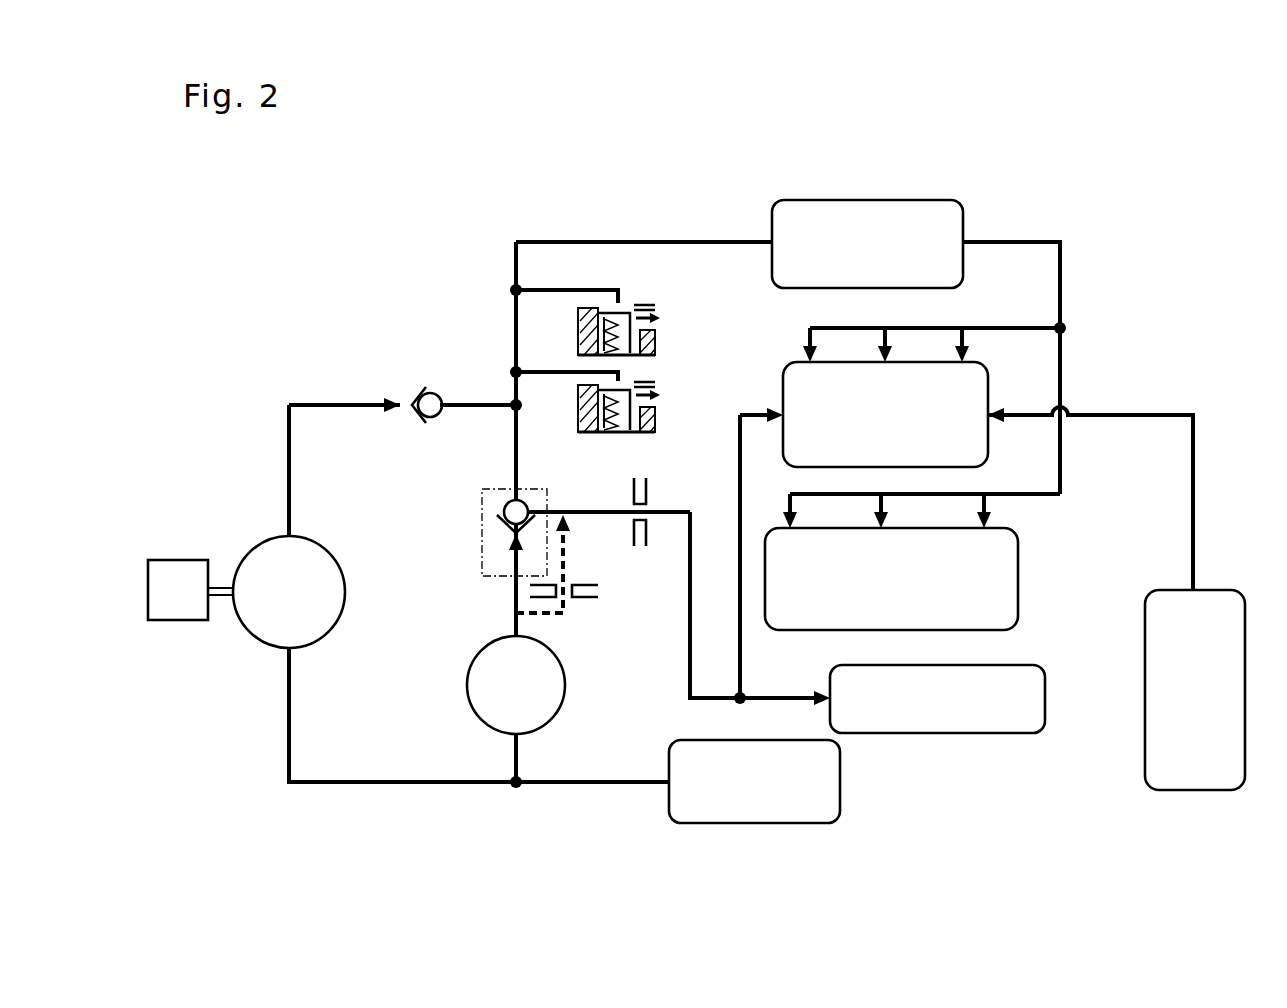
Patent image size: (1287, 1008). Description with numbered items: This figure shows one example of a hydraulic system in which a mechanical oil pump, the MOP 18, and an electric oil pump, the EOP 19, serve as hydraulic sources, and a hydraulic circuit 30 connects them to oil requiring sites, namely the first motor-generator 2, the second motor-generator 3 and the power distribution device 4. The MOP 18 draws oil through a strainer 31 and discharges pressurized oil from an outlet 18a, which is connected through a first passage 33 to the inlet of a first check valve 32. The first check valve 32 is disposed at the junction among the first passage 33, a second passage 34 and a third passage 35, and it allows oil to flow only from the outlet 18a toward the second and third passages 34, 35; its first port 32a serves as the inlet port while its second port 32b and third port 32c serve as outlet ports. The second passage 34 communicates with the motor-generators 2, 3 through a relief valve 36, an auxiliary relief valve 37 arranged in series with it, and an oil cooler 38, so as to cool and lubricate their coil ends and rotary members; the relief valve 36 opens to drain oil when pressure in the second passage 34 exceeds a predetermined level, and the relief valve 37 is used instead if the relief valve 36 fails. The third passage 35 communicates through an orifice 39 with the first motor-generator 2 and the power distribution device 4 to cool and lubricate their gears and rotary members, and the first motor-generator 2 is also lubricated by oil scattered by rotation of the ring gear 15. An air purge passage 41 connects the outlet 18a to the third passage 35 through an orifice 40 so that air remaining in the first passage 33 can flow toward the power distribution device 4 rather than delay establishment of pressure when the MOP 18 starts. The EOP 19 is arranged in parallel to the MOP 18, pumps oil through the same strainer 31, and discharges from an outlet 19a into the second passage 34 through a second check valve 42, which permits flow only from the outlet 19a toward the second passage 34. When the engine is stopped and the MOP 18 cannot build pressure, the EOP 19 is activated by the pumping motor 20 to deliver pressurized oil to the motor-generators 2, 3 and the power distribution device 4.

The first motor-generator 2 is at (792, 383).
The second motor-generator 3 is at (1018, 574).
The power distribution device 4 is at (1045, 698).
The ring gear 15 is at (1192, 790).
The mechanical oil pump (MOP) 18 is at (478, 705).
The outlet 18a is at (513, 632).
The electric oil pump (EOP) 19 is at (260, 556).
The outlet 19a is at (290, 537).
The pumping motor 20 is at (178, 620).
The hydraulic circuit 30 is at (418, 256).
The strainer 31 is at (752, 823).
The first check valve 32 is at (486, 527).
The first port 32a is at (512, 534).
The second port 32b is at (503, 500).
The third port 32c is at (530, 505).
The first passage 33 is at (513, 598).
The second passage 34 is at (514, 462).
The third passage 35 is at (598, 515).
The relief valve 36 is at (656, 378).
The relief valve 37 is at (652, 300).
The oil cooler 38 is at (870, 200).
The orifice 39 is at (650, 488).
The orifice 40 is at (598, 600).
The air purge passage 41 is at (546, 626).
The second check valve 42 is at (420, 383).